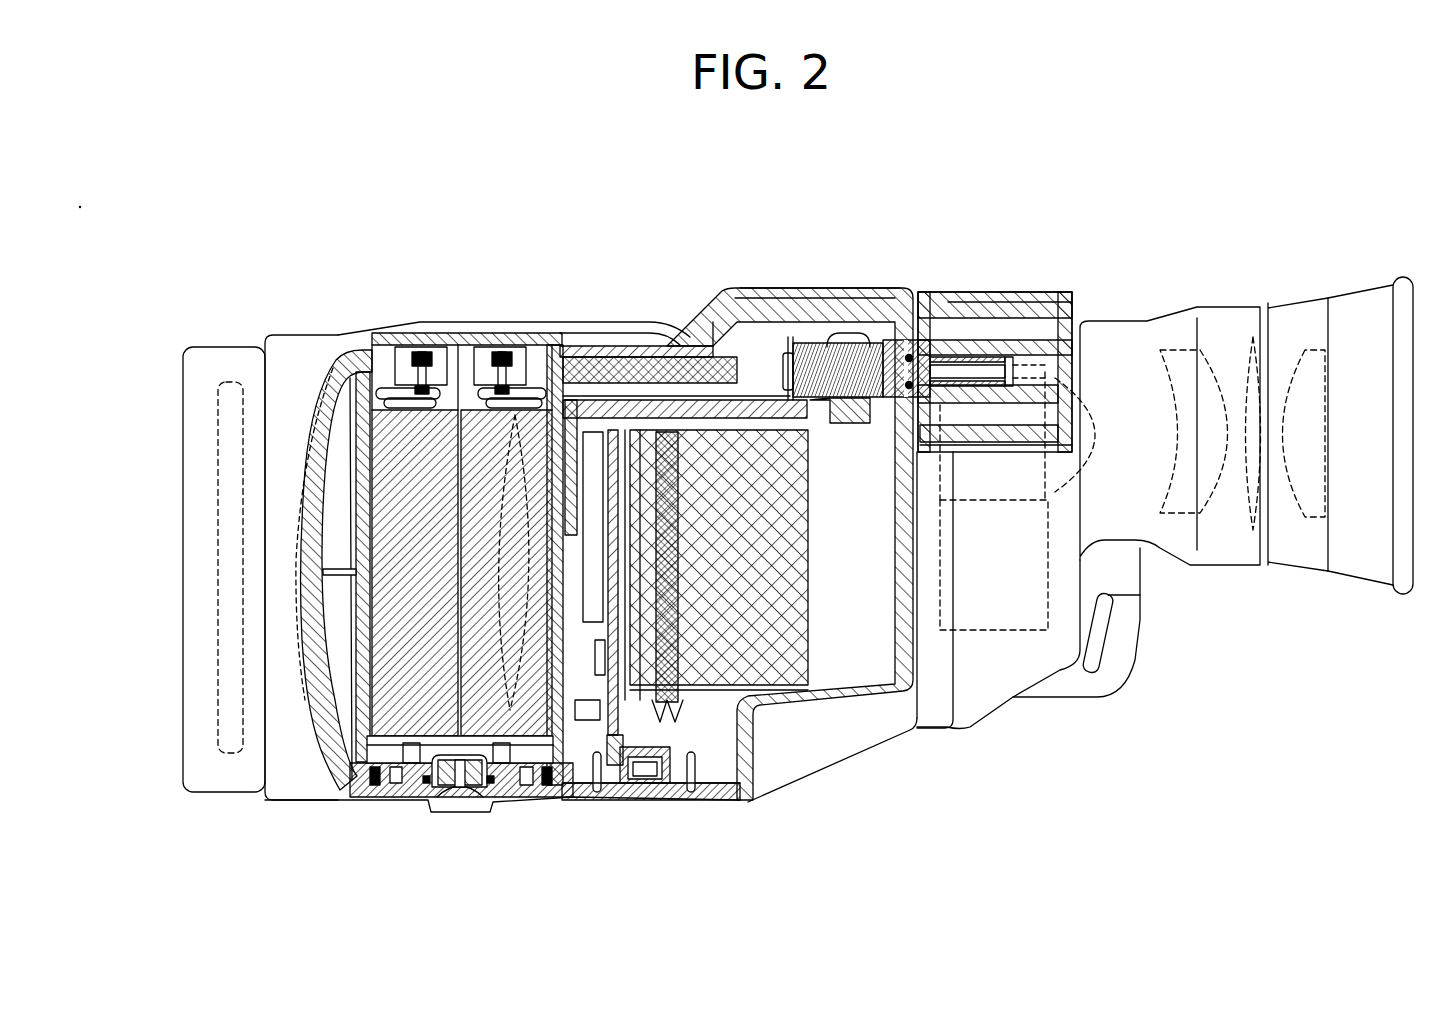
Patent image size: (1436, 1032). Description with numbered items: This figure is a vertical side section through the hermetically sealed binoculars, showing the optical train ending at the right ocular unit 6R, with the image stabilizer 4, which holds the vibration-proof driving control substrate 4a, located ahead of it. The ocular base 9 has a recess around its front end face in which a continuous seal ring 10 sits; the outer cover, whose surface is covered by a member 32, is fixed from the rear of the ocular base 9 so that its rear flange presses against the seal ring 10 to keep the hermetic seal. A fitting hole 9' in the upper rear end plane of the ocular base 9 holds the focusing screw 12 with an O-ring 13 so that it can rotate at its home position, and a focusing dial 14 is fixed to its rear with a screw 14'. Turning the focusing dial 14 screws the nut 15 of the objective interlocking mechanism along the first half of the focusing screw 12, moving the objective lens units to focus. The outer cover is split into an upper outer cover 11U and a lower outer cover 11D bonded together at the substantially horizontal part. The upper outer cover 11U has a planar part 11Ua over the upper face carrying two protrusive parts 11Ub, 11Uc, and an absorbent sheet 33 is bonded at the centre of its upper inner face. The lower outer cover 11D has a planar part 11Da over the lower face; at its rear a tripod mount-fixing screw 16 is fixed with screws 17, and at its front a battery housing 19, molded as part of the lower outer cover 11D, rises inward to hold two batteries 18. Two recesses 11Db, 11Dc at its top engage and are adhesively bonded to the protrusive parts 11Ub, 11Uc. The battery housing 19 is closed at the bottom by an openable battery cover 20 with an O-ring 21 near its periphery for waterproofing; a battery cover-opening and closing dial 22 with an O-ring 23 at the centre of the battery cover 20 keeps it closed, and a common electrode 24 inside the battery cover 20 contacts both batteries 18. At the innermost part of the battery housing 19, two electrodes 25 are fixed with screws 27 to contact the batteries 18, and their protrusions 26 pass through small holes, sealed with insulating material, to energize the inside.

The image stabilizer 4 is at (818, 678).
The vibration-proof driving control substrate 4a is at (617, 708).
The ocular unit 6R is at (920, 808).
The ocular base 9 is at (921, 587).
The fitting hole 9' is at (995, 318).
The seal ring 10 is at (730, 310).
The upper outer cover 11U is at (330, 517).
The planar part 11Ua is at (657, 345).
The protrusive part 11Ub is at (536, 346).
The protrusive part 11Uc is at (387, 347).
The lower outer cover 11D is at (353, 775).
The planar part 11Da is at (578, 812).
The recess 11Db is at (575, 345).
The recess 11Dc is at (402, 375).
The focusing screw 12 is at (887, 355).
The O-ring 13 is at (917, 340).
The focusing dial 14 is at (995, 329).
The screw 14' is at (1000, 315).
The nut 15 is at (832, 342).
The tripod mount-fixing screw 16 is at (672, 800).
The screws 17 is at (597, 792).
The batteries 18 is at (403, 647).
The battery housing 19 is at (360, 600).
The battery cover 20 is at (523, 792).
The O-ring 21 is at (553, 792).
The battery cover-opening and closing dial 22 is at (440, 782).
The O-ring 23 is at (488, 788).
The common electrode 24 is at (412, 780).
The electrodes 25 is at (622, 350).
The protrusions 26 is at (462, 350).
The screws 27 is at (417, 352).
The member 32 is at (790, 300).
The absorbent sheet 33 is at (684, 357).